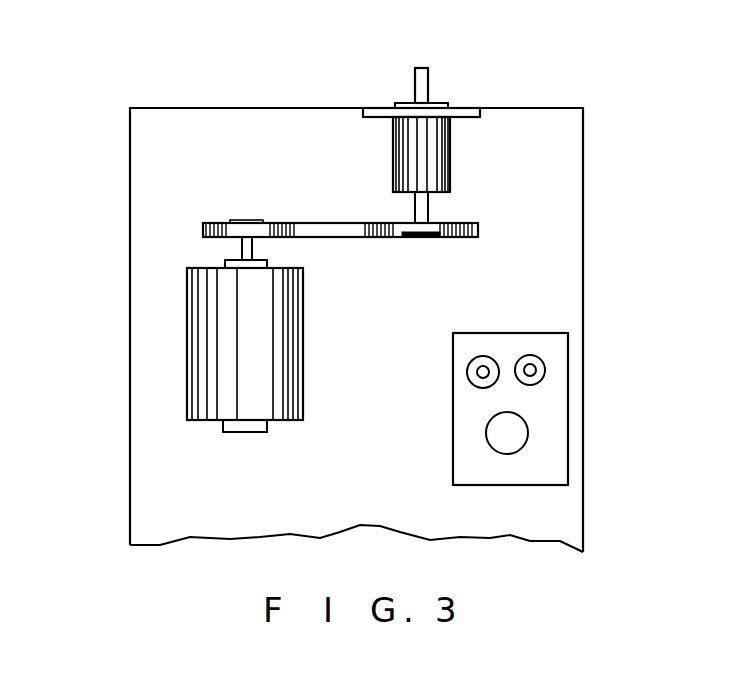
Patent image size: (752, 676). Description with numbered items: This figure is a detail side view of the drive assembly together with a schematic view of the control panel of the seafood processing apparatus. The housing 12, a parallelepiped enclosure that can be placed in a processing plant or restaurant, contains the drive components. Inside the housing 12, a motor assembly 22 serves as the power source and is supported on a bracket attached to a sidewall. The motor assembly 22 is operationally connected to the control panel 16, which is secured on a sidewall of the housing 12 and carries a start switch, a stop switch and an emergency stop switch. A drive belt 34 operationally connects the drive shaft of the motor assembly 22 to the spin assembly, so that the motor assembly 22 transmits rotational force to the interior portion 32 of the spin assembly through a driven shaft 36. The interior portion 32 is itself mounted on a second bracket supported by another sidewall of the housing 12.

The housing 12 is at (583, 159).
The control panel 16 is at (568, 390).
The motor assembly 22 is at (187, 354).
The interior portion of the spin assembly 32 is at (393, 150).
The drive belt 34 is at (319, 222).
The driven shaft 36 is at (430, 90).